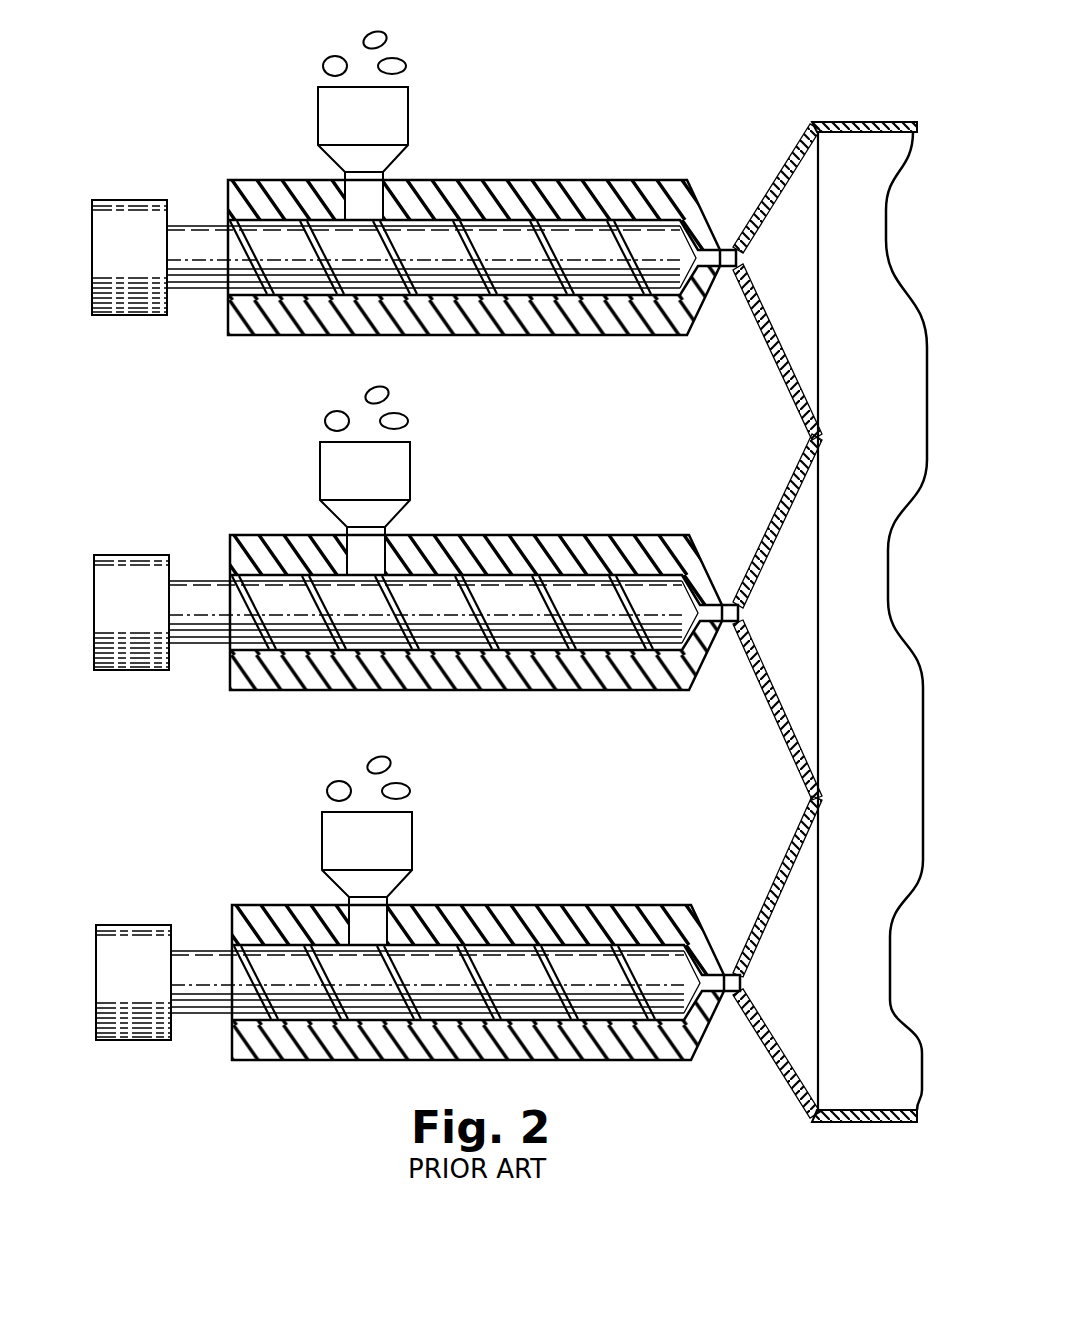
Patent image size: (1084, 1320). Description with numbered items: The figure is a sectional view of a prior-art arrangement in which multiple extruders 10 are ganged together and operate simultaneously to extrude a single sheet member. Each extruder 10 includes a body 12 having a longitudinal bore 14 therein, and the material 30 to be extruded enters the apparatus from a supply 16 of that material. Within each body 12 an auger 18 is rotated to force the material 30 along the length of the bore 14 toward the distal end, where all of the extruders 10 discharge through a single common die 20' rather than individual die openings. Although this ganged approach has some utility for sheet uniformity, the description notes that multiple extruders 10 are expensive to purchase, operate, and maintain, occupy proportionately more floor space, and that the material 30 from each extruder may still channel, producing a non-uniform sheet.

The extruder 10 is at (416, 551).
The body 12 is at (484, 641).
The longitudinal bore 14 is at (442, 570).
The supply 16 is at (391, 516).
The auger 18 is at (433, 664).
The material 30 is at (398, 401).
The die 20' is at (830, 622).